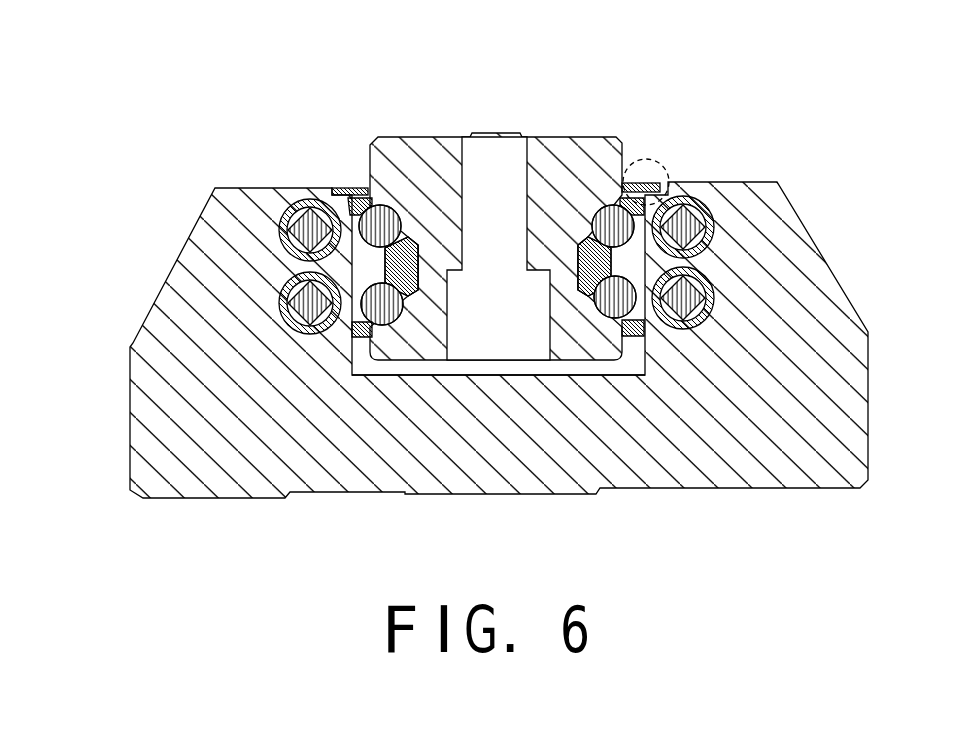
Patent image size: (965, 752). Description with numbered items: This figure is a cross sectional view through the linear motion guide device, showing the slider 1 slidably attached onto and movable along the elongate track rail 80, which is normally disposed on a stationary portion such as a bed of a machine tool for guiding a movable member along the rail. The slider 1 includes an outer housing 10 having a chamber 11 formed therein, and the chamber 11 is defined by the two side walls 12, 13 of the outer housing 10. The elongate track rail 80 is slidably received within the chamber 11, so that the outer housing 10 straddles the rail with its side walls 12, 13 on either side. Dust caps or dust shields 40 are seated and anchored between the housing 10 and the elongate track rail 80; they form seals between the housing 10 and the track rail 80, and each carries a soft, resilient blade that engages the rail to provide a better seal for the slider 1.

The slider 1 is at (500, 296).
The outer housing 10 is at (500, 370).
The chamber 11 is at (626, 368).
The side wall 12 is at (830, 330).
The side wall 13 is at (160, 322).
The dust shield 40 is at (356, 193).
The elongate track rail 80 is at (590, 135).